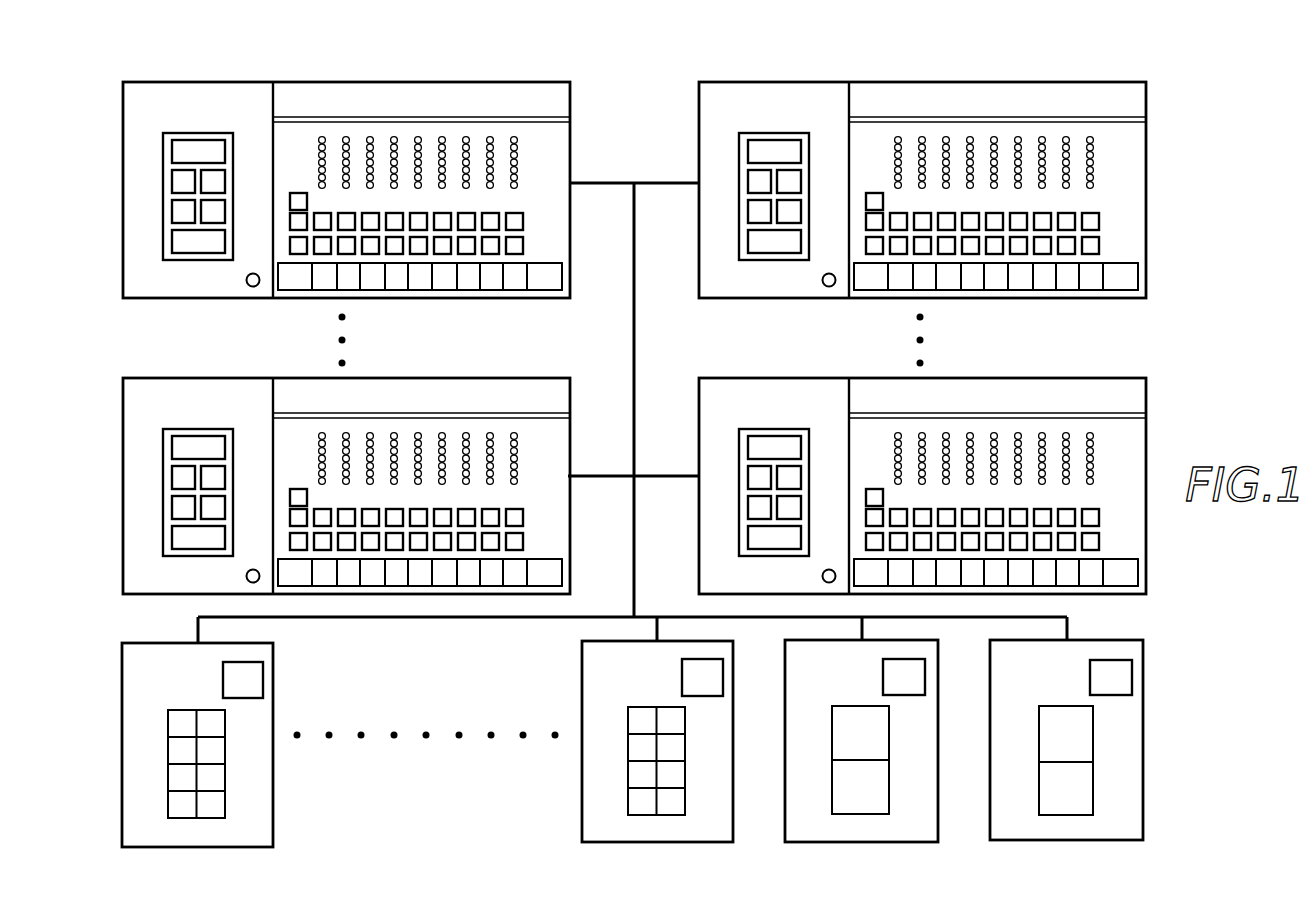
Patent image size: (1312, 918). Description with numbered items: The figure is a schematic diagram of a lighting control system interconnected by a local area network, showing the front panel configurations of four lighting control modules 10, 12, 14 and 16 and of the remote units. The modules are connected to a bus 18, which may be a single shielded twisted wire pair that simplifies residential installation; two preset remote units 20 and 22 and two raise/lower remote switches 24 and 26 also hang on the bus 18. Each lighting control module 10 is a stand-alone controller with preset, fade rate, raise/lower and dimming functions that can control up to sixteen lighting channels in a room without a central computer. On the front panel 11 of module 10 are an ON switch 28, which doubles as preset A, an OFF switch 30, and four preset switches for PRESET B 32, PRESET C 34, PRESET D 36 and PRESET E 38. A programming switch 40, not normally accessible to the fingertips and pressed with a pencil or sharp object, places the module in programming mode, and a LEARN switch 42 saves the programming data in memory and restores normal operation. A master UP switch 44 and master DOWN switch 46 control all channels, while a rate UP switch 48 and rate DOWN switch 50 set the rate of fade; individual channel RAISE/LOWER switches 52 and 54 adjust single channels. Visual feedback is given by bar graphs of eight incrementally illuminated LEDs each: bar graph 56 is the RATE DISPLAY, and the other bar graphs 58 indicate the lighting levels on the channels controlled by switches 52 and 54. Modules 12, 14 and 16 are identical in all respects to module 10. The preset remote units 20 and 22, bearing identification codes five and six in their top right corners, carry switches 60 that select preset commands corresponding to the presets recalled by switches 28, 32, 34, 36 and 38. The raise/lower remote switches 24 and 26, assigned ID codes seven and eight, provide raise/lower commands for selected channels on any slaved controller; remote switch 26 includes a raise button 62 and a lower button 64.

The lighting control module 10 is at (337, 194).
The front panel 11 is at (172, 195).
The lighting control module 12 is at (527, 378).
The lighting control module 14 is at (1113, 82).
The lighting control module 16 is at (1105, 377).
The bus 18 is at (635, 378).
The preset remote unit 20 is at (194, 745).
The preset remote unit 22 is at (582, 690).
The raise/lower remote switch 24 is at (938, 690).
The raise/lower remote switch 26 is at (1094, 740).
The ON switch 28 is at (195, 148).
The OFF switch 30 is at (182, 243).
The PRESET B switch 32 is at (180, 185).
The PRESET C switch 34 is at (218, 178).
The PRESET D switch 36 is at (180, 210).
The PRESET E switch 38 is at (213, 215).
The programming switch 40 is at (253, 287).
The LEARN switch 42 is at (302, 190).
The master UP switch 44 is at (297, 228).
The master DOWN switch 46 is at (297, 255).
The rate UP switch 48 is at (320, 225).
The rate DOWN switch 50 is at (320, 254).
The channel RAISE/LOWER switches 52 is at (470, 215).
The channel RAISE/LOWER switches 54 is at (468, 254).
The RATE DISPLAY bar graph 56 is at (320, 140).
The bar graphs 58 is at (442, 137).
The switches 60 is at (182, 783).
The raise button 62 is at (1078, 739).
The lower button 64 is at (1082, 792).